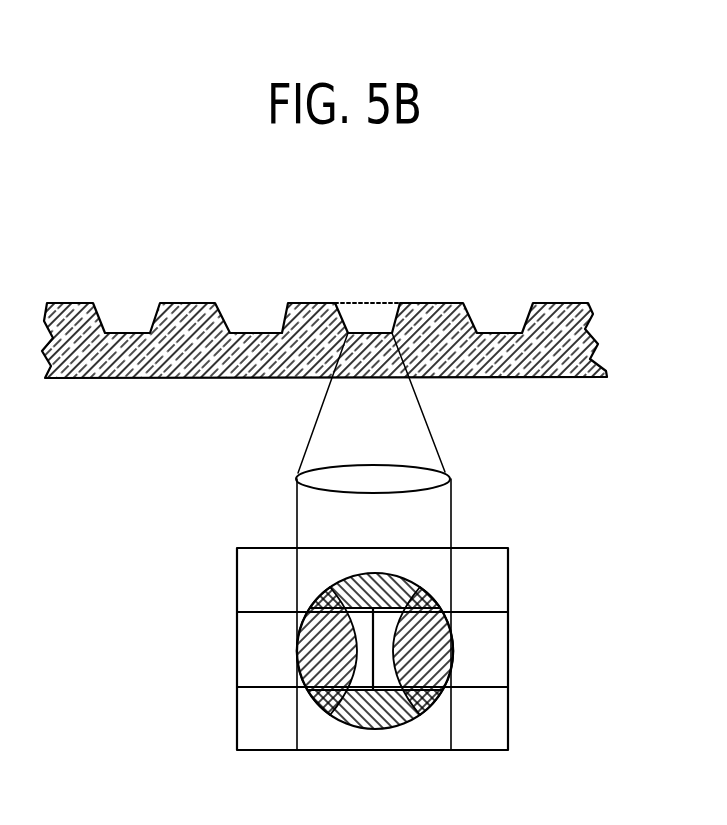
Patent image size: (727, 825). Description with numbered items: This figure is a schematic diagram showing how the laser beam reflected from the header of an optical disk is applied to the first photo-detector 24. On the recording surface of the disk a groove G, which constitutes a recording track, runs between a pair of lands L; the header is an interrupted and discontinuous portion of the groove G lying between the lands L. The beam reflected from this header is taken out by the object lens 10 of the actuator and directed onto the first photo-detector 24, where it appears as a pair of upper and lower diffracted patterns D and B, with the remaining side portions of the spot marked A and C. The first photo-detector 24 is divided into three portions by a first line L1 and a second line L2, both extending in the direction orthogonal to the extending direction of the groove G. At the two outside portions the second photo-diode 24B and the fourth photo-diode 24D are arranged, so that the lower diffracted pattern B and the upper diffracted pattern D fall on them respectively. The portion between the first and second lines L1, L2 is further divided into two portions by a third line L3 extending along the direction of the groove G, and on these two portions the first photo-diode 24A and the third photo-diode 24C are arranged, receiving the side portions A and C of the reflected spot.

The object lens 10 is at (440, 462).
The first photo-detector 24 is at (512, 573).
The first photo-diode 24A is at (260, 667).
The second photo-diode 24B is at (278, 723).
The third photo-diode 24C is at (485, 663).
The fourth photo-diode 24D is at (470, 565).
The land L is at (308, 302).
The groove G is at (365, 300).
The first line L1 is at (473, 612).
The second line L2 is at (475, 688).
The third line L3 is at (373, 690).
The diffracted pattern A is at (313, 640).
The lower diffracted pattern B is at (402, 730).
The diffracted pattern C is at (442, 632).
The upper diffracted pattern D is at (347, 580).